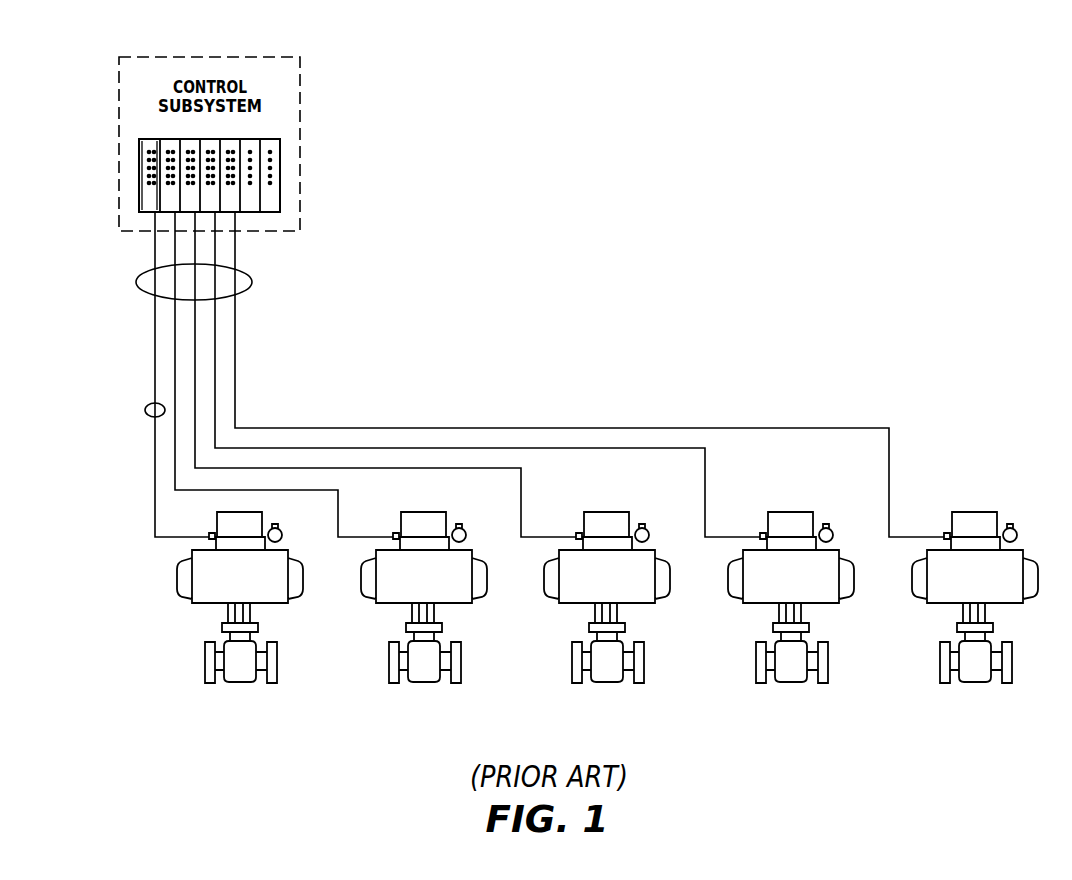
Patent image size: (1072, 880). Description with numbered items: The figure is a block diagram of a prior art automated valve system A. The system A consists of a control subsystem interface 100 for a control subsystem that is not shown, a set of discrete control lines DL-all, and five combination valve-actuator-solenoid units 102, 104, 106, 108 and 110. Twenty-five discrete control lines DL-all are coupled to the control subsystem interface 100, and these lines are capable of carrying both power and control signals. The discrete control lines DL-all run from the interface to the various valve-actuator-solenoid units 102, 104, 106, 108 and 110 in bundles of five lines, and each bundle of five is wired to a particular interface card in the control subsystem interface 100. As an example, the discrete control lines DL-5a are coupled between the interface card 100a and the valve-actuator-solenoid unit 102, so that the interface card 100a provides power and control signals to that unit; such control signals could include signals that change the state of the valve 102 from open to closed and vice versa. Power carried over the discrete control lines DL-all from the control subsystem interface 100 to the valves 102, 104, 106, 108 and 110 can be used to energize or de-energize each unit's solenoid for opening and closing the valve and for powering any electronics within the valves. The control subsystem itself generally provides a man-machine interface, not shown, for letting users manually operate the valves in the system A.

The control subsystem interface 100 is at (119, 134).
The interface card 100a is at (147, 212).
The valve-actuator-solenoid unit 102 is at (245, 614).
The valve-actuator-solenoid unit 104 is at (429, 614).
The valve-actuator-solenoid unit 106 is at (612, 614).
The valve-actuator-solenoid unit 108 is at (796, 614).
The valve-actuator-solenoid unit 110 is at (980, 614).
The discrete control lines DL-all is at (256, 275).
The discrete control lines DL-5a is at (145, 410).
The system A is at (904, 76).